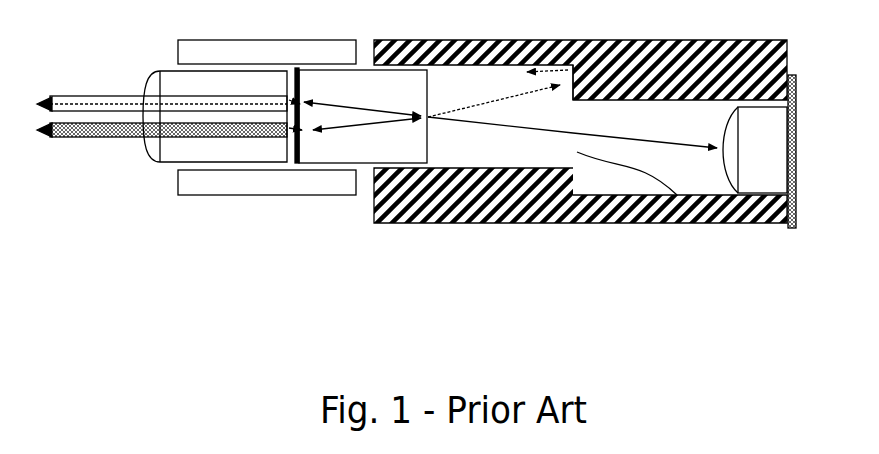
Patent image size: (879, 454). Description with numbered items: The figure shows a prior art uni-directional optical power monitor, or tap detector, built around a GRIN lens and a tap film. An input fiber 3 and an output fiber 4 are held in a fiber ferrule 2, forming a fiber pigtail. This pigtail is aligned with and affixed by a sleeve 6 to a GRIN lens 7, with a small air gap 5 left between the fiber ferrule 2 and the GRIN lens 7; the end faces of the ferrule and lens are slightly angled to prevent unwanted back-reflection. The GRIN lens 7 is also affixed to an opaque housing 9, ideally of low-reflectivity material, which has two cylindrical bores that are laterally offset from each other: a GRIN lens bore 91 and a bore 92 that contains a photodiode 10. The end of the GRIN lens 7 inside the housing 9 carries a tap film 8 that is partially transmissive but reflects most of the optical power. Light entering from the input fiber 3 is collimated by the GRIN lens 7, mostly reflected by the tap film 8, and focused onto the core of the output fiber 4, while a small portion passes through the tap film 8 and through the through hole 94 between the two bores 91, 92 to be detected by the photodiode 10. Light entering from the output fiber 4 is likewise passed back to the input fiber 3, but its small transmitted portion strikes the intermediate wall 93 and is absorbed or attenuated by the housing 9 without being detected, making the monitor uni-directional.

The fiber ferrule 2 is at (227, 153).
The input fiber 3 is at (122, 97).
The output fiber 4 is at (110, 137).
The air gap 5 is at (291, 72).
The sleeve 6 is at (282, 194).
The GRIN lens 7 is at (333, 145).
The tap film 8 is at (430, 90).
The opaque housing 9 is at (499, 249).
The GRIN lens bore 91 is at (437, 226).
The bore 92 is at (652, 113).
The intermediate wall 93 is at (590, 73).
The through hole 94 is at (663, 224).
The photodiode 10 is at (767, 224).